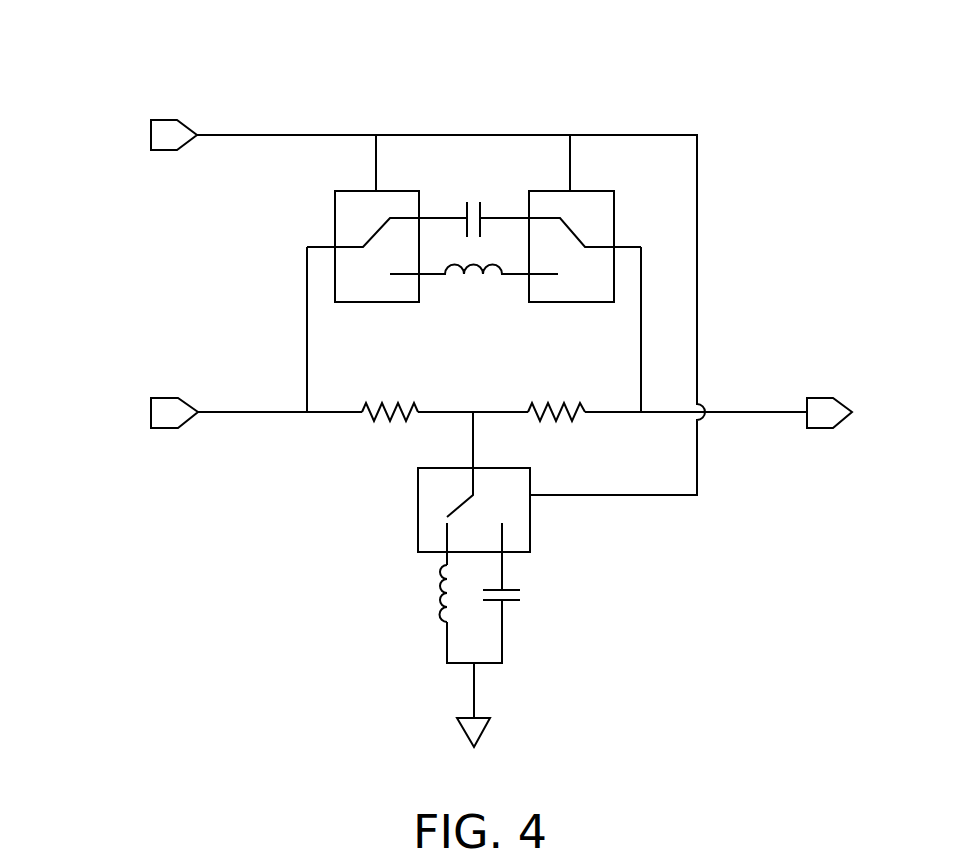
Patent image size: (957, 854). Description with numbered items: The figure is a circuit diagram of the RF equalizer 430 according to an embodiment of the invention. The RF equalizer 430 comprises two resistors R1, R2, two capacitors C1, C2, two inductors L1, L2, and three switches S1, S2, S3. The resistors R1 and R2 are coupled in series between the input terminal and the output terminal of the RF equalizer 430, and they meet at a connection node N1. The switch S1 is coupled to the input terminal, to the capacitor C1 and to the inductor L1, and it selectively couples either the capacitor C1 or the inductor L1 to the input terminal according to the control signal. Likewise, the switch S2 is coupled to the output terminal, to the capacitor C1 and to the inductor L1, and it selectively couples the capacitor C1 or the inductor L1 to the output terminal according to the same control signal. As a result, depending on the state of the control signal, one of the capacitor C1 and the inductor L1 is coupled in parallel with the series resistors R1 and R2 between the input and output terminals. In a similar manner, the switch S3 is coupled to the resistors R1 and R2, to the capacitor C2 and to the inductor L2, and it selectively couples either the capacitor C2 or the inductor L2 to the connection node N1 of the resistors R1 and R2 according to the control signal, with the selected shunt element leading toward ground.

The RF equalizer 430 is at (105, 80).
The switch S1 is at (335, 216).
The switch S2 is at (614, 218).
The switch S3 is at (418, 507).
The capacitor C1 is at (472, 200).
The capacitor C2 is at (522, 595).
The inductor L1 is at (473, 276).
The inductor L2 is at (437, 593).
The resistor R1 is at (393, 402).
The resistor R2 is at (560, 402).
The connection node N1 is at (473, 405).